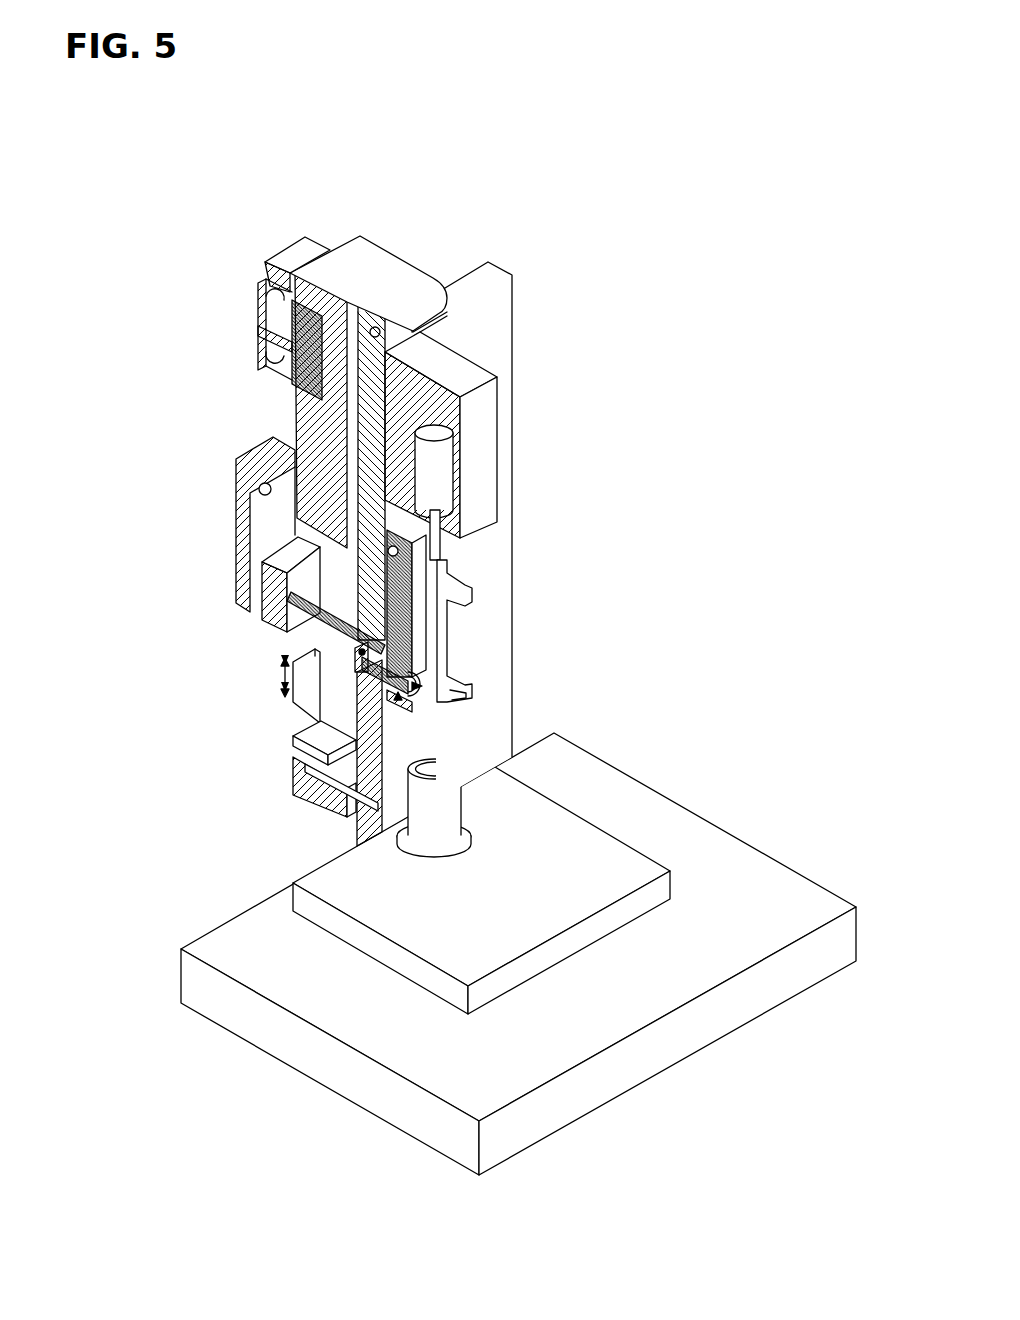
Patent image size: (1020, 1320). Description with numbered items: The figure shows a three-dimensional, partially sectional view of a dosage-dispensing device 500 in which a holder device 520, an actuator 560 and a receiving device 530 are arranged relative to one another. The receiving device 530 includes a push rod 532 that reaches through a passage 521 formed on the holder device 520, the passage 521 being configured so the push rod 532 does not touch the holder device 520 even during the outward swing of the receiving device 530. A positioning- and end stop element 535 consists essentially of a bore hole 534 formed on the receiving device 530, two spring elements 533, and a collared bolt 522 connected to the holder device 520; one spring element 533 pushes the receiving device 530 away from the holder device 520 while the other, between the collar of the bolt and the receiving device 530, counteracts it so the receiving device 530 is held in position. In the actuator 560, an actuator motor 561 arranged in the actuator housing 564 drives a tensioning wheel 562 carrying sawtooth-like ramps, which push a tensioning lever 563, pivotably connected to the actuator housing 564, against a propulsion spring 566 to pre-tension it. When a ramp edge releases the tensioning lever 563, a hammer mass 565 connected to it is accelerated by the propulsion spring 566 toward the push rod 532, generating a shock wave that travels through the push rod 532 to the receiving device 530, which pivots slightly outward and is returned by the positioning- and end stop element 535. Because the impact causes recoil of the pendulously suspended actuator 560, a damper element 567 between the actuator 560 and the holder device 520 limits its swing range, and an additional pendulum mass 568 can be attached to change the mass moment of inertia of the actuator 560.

The dosage-dispensing device 500 is at (570, 247).
The holder device 520 is at (482, 345).
The passage 521 is at (360, 662).
The collared bolt 522 is at (452, 705).
The receiving device 530 is at (420, 648).
The push rod 532 is at (357, 650).
The spring elements 533 is at (405, 668).
The bore hole 534 is at (420, 700).
The positioning- and end stop element 535 is at (447, 702).
The actuator 560 is at (203, 341).
The actuator motor 561 is at (290, 380).
The tensioning wheel 562 is at (268, 294).
The tensioning lever 563 is at (295, 253).
The actuator housing 564 is at (315, 438).
The hammer mass 565 is at (290, 596).
The propulsion spring 566 is at (256, 576).
The damper element 567 is at (335, 802).
The additional pendulum mass 568 is at (388, 672).